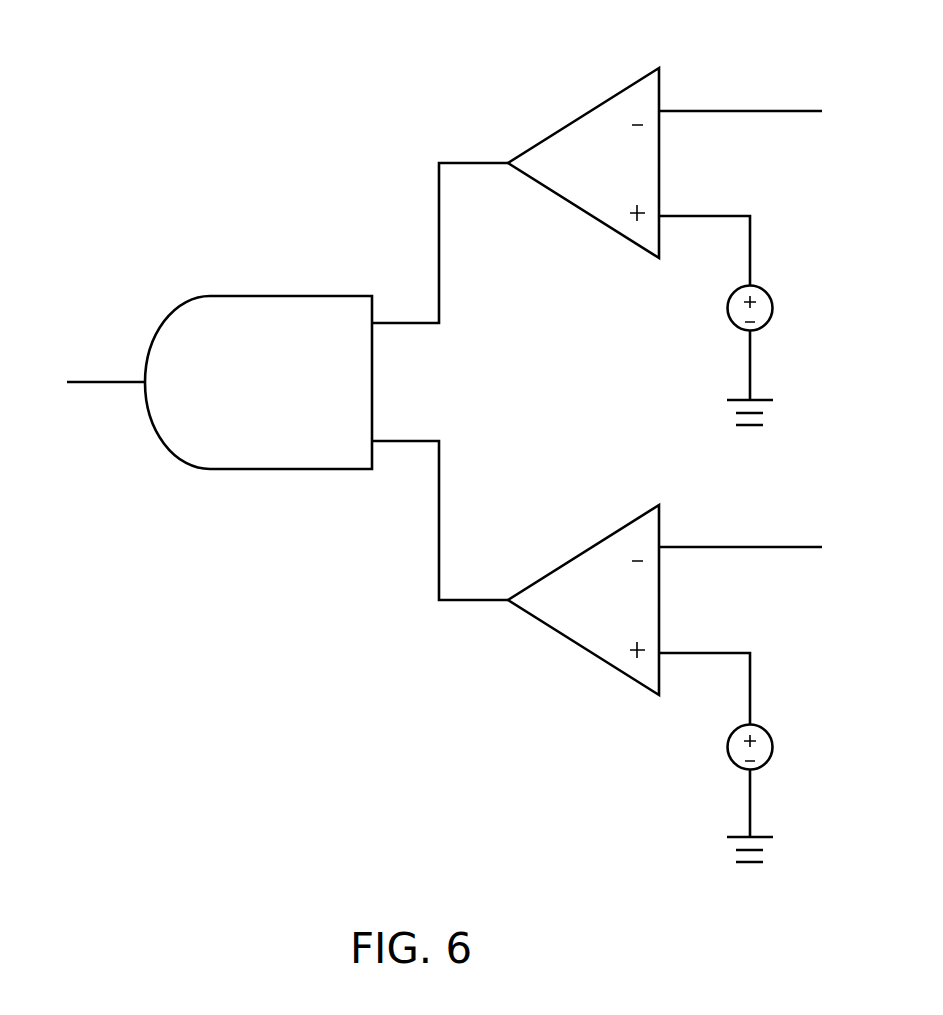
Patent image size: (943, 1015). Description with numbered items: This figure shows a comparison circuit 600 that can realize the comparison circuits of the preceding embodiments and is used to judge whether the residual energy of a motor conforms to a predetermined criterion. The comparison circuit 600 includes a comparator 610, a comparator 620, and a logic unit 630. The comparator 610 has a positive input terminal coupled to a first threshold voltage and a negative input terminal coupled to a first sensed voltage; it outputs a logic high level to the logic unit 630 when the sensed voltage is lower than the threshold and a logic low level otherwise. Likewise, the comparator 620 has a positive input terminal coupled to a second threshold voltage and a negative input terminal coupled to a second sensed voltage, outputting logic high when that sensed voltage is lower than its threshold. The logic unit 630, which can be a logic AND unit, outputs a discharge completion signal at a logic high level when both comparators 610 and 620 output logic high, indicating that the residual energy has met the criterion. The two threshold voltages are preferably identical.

The comparison circuit 600 is at (253, 117).
The comparator 610 is at (581, 112).
The comparator 620 is at (581, 549).
The logic unit 630 is at (290, 469).